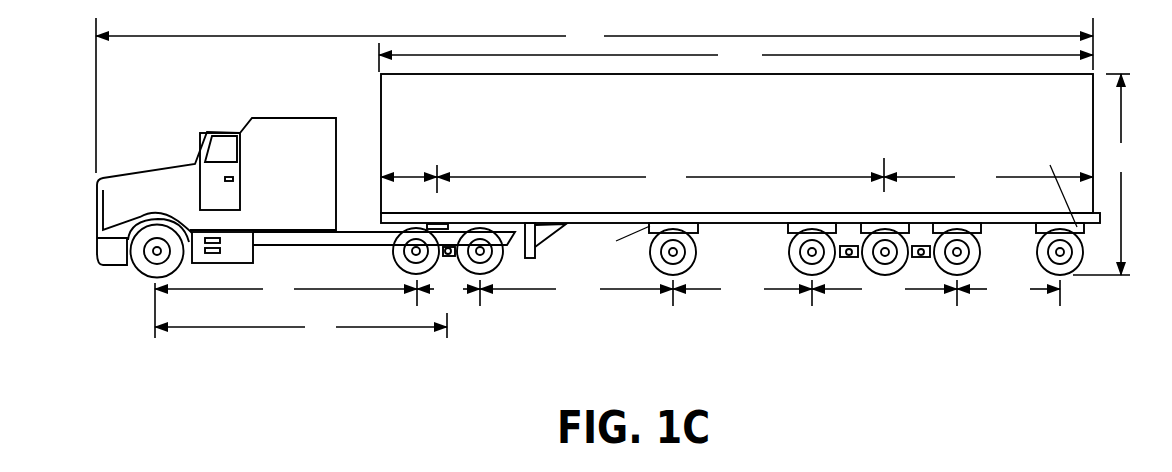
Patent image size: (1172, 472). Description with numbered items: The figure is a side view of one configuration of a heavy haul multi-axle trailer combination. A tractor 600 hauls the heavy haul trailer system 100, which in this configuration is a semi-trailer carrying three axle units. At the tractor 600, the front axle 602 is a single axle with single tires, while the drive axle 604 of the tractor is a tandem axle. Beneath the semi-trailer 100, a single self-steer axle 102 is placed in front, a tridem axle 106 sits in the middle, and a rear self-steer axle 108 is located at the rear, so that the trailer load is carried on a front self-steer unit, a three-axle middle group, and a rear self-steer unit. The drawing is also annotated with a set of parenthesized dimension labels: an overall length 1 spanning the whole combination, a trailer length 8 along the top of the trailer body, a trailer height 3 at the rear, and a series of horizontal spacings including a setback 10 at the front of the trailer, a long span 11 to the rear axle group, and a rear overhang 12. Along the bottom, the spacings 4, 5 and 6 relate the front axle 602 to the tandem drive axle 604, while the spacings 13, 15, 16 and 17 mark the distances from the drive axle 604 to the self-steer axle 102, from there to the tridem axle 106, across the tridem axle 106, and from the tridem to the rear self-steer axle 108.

The heavy haul trailer system 100 is at (930, 132).
The self-steer axle 102 is at (652, 268).
The tridem axle 106 is at (795, 268).
The rear self-steer axle 108 is at (1066, 274).
The tractor 600 is at (308, 168).
The front axle 602 is at (142, 272).
The drive axle 604 is at (503, 267).
The overall length dimension 1 is at (594, 95).
The trailer height dimension 3 is at (1104, 174).
The front axle to drive axle dimension 4 is at (286, 308).
The drive axle spacing dimension 5 is at (448, 292).
The front axle to tandem center dimension 6 is at (301, 326).
The trailer length dimension 8 is at (736, 57).
The kingpin setback dimension 10 is at (403, 176).
The kingpin to axle group dimension 11 is at (660, 175).
The rear overhang dimension 12 is at (988, 178).
The drive axle to self-steer axle dimension 13 is at (576, 292).
The self-steer axle to tridem dimension 15 is at (742, 292).
The tridem spread dimension 16 is at (884, 292).
The tridem to rear self-steer axle dimension 17 is at (1008, 292).